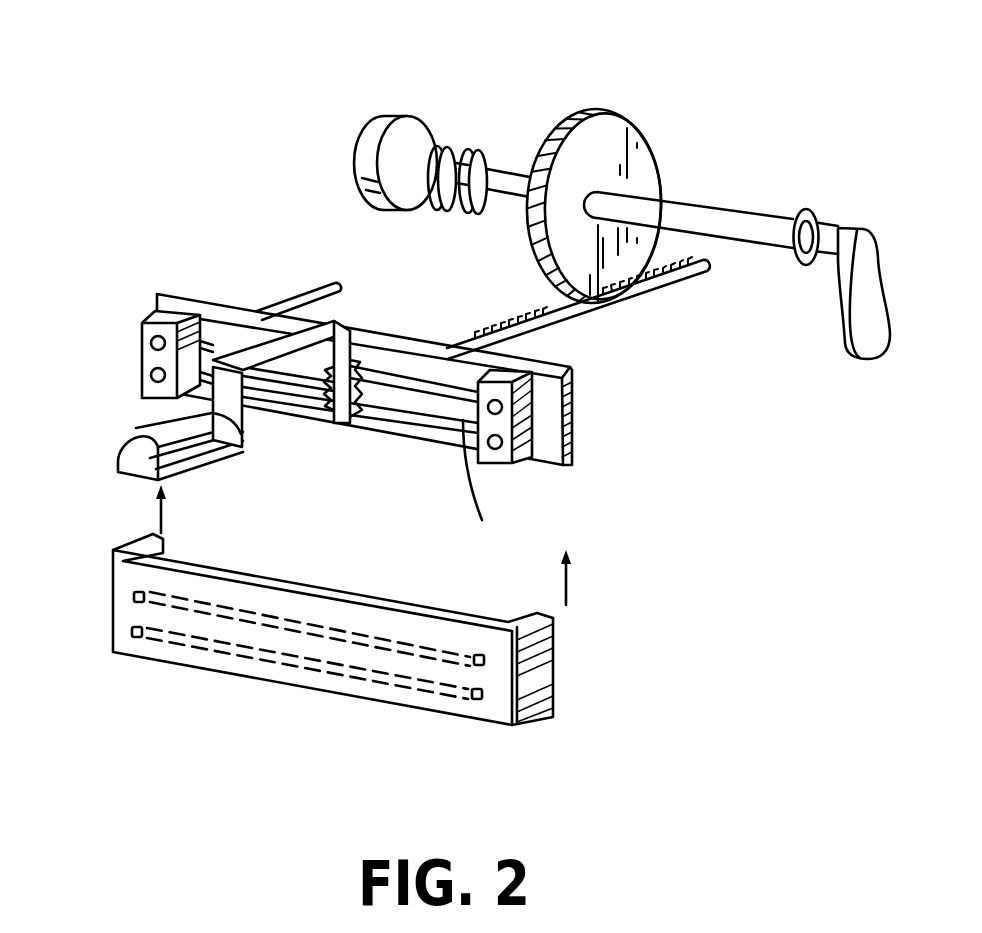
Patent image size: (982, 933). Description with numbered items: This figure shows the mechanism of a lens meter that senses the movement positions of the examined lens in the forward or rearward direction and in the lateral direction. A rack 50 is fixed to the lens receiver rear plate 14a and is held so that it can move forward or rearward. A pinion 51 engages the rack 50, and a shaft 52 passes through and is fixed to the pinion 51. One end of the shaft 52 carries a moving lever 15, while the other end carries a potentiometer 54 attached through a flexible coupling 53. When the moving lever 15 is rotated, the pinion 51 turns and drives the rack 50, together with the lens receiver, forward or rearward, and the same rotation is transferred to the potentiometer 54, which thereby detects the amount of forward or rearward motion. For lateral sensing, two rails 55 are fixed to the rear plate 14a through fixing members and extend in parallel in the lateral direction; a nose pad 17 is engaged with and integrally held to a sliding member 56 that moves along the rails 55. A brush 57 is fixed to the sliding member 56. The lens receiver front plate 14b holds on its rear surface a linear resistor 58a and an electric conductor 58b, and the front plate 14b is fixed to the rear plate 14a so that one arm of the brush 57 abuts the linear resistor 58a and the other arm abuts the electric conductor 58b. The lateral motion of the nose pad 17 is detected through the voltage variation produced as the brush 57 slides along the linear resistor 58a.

The lens receiver rear plate 14a is at (412, 399).
The lens receiver front plate 14b is at (401, 674).
The moving lever 15 is at (841, 233).
The nose pad 17 is at (163, 433).
The rack 50 is at (577, 322).
The pinion 51 is at (645, 170).
The shaft 52 is at (748, 213).
The flexible coupling 53 is at (492, 150).
The potentiometer 54 is at (380, 128).
The rails 55 is at (440, 387).
The sliding member 56 is at (372, 405).
The brush 57 is at (330, 412).
The linear resistor 58a is at (443, 693).
The electric conductor 58b is at (390, 647).